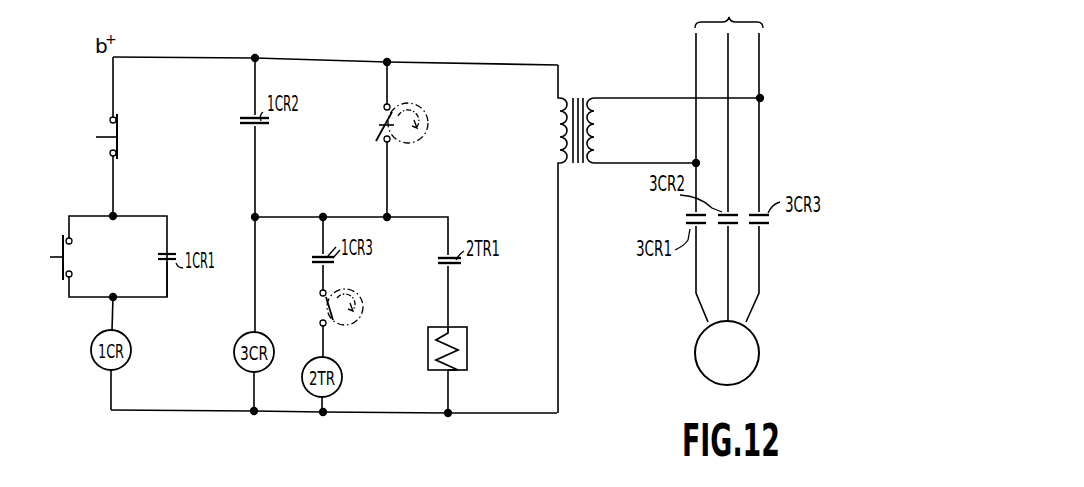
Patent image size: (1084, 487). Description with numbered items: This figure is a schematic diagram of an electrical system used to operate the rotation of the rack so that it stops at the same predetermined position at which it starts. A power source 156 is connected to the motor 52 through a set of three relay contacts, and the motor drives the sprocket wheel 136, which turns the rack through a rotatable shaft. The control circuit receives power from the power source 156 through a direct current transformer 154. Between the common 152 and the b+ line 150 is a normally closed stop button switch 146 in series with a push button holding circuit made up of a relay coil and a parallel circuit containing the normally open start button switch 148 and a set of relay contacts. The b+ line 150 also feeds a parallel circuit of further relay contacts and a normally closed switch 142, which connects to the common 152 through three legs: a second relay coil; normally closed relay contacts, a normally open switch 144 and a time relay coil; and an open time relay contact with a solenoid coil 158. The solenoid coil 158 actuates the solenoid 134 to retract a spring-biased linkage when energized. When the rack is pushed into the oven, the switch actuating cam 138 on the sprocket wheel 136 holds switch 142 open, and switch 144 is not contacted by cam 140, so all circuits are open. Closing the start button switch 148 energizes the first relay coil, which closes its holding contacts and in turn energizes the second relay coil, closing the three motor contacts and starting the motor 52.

The b+ line 150 is at (214, 57).
The common 152 is at (397, 414).
The stop button switch 146 is at (108, 122).
The start button switch 148 is at (58, 251).
The normally closed switch 142 is at (383, 110).
The switch actuating cam 138 is at (420, 104).
The sprocket wheel 136 is at (420, 136).
The normally open switch 144 is at (318, 299).
The cam 140 is at (360, 298).
The solenoid 134 is at (459, 327).
The solenoid coil 158 is at (458, 348).
The direct current transformer 154 is at (578, 93).
The power source 156 is at (748, 8).
The motor 52 is at (738, 352).